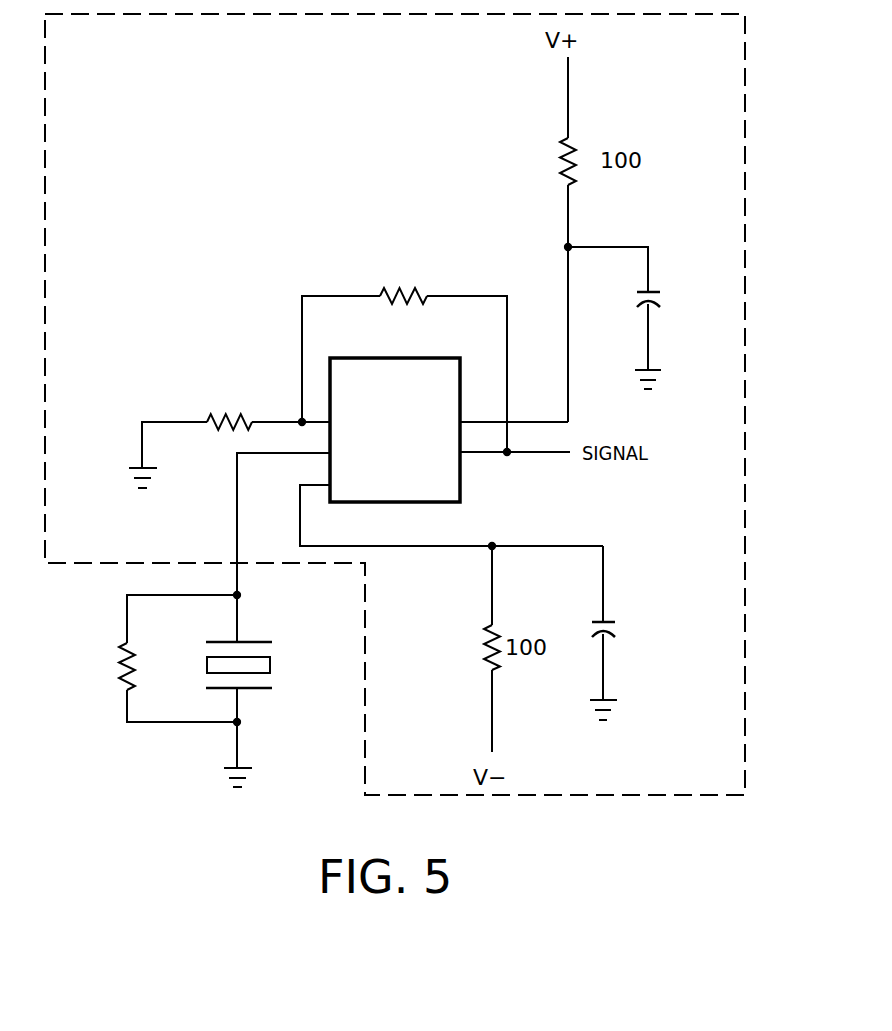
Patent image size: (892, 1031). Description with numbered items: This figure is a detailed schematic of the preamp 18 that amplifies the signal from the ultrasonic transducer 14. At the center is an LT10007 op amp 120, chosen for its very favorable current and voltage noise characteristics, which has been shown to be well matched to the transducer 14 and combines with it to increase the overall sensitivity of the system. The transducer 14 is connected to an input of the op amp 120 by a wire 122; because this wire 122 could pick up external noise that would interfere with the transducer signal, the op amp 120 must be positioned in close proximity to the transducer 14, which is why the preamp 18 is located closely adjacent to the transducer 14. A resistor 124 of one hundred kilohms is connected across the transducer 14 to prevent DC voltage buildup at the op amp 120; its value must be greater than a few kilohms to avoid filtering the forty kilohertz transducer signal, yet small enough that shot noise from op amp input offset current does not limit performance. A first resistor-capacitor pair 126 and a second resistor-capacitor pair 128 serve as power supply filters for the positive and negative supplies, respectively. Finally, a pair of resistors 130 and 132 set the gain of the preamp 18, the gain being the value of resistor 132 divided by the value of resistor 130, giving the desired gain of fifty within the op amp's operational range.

The preamp 18 is at (687, 85).
The ultrasonic transducer 14 is at (272, 663).
The op amp 120 is at (462, 470).
The wire 122 is at (237, 520).
The 100K resistor 124 is at (118, 655).
The first resistor-capacitor pair 126 is at (668, 333).
The second resistor-capacitor pair 128 is at (637, 648).
The resistor 130 is at (207, 420).
The resistor 132 is at (382, 290).